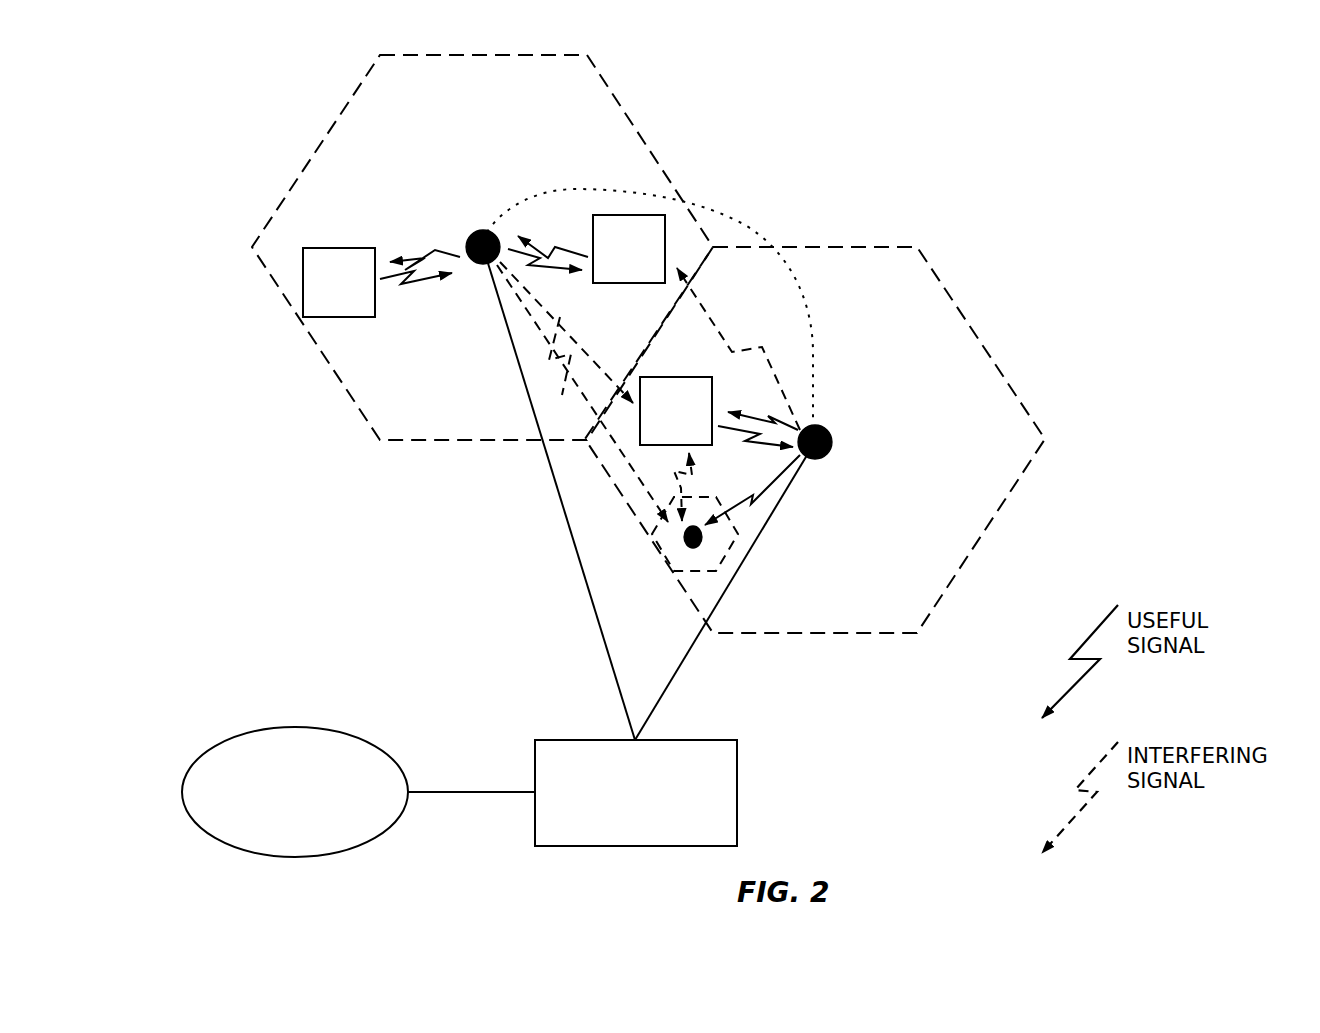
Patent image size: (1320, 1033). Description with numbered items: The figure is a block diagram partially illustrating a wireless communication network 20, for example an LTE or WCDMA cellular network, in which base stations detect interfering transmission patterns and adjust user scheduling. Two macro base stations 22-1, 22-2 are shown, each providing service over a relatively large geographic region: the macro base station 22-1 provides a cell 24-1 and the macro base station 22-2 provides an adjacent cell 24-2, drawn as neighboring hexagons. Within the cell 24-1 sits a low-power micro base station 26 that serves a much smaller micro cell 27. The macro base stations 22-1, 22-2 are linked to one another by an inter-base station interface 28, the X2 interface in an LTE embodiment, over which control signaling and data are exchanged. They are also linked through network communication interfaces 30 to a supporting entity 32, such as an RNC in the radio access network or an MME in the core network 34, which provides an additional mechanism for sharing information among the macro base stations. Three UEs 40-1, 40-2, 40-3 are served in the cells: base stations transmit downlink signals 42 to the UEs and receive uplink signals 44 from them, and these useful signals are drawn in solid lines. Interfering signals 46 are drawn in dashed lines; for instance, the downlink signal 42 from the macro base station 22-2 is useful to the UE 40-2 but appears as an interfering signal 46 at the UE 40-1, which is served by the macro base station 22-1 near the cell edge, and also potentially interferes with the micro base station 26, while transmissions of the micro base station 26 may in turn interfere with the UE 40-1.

The wireless communication network 20 is at (900, 160).
The macro base station 22-1 is at (826, 432).
The macro base station 22-2 is at (478, 232).
The cell 24-1 is at (968, 325).
The cell 24-2 is at (645, 145).
The micro base station 26 is at (685, 544).
The micro cell 27 is at (700, 571).
The inter-base station interface 28 is at (707, 212).
The network communication interface 30 is at (612, 667).
The supporting entity 32 is at (636, 793).
The core network 34 is at (358, 792).
The UE 40-1 is at (676, 411).
The UE 40-2 is at (629, 249).
The UE 40-3 is at (339, 282).
The downlink signal 42 is at (432, 253).
The uplink signal 44 is at (415, 282).
The interfering signal 46 is at (551, 362).